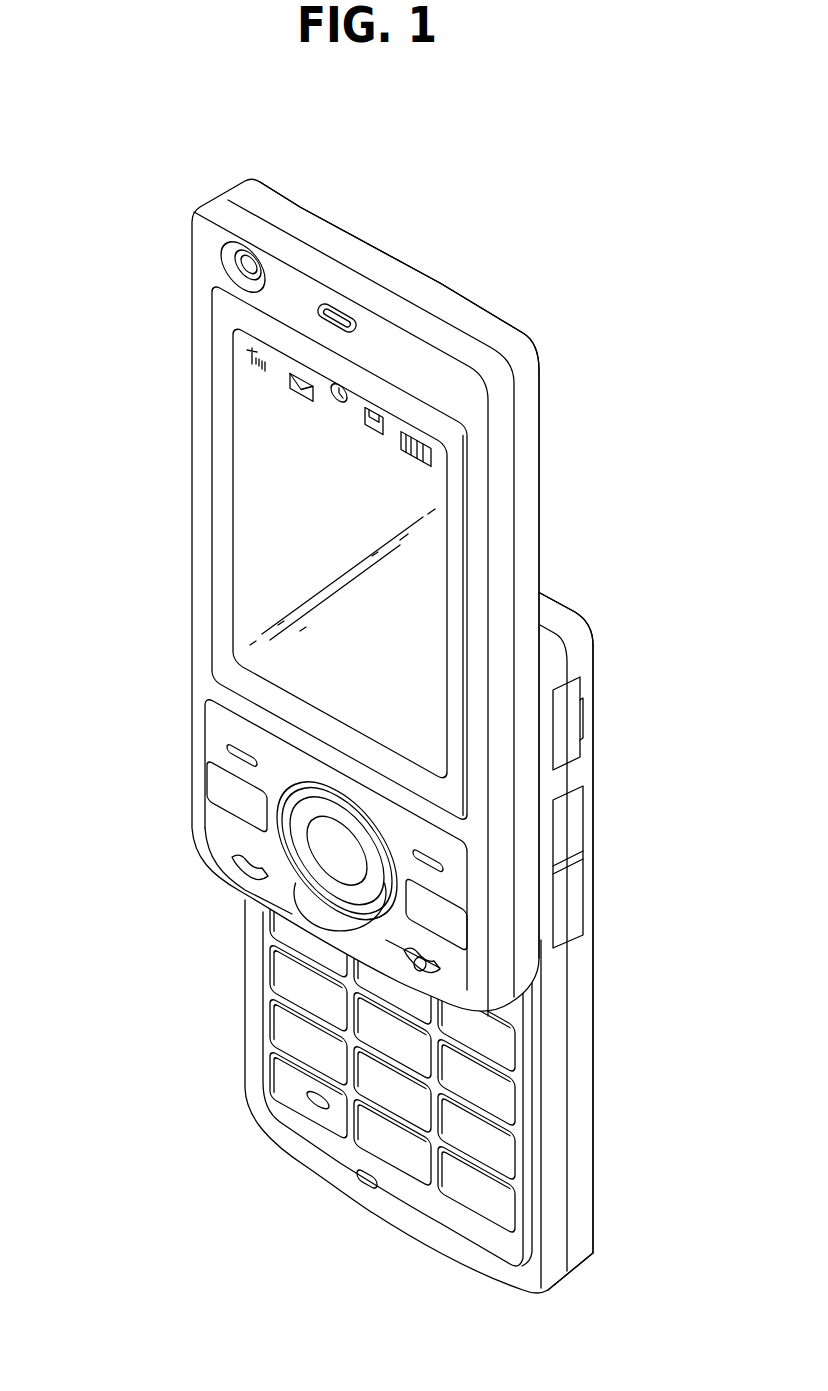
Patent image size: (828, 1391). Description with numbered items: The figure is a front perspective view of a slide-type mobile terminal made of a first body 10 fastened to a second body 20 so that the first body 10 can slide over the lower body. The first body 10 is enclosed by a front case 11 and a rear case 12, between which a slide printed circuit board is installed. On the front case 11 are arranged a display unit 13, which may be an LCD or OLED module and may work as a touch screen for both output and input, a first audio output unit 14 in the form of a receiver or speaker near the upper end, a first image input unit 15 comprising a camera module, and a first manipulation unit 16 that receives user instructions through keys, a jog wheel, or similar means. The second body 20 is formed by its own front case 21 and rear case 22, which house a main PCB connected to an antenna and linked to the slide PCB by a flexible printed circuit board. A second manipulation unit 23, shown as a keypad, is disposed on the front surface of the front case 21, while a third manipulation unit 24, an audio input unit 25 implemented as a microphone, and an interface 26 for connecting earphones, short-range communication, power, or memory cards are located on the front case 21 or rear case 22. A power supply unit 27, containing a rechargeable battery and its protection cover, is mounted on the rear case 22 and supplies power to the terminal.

The first body 10 is at (150, 388).
The front case 11 is at (500, 500).
The rear case 12 is at (525, 443).
The display unit 13 is at (252, 517).
The first audio output unit 14 is at (340, 318).
The first image input unit 15 is at (243, 266).
The first manipulation unit 16 is at (220, 790).
The second body 20 is at (215, 980).
The front case 21 is at (548, 634).
The rear case 22 is at (575, 652).
The second manipulation unit 23 is at (280, 1072).
The third manipulation unit 24 is at (572, 900).
The audio input unit 25 is at (363, 1190).
The interface 26 is at (565, 742).
The power supply unit 27 is at (587, 1110).